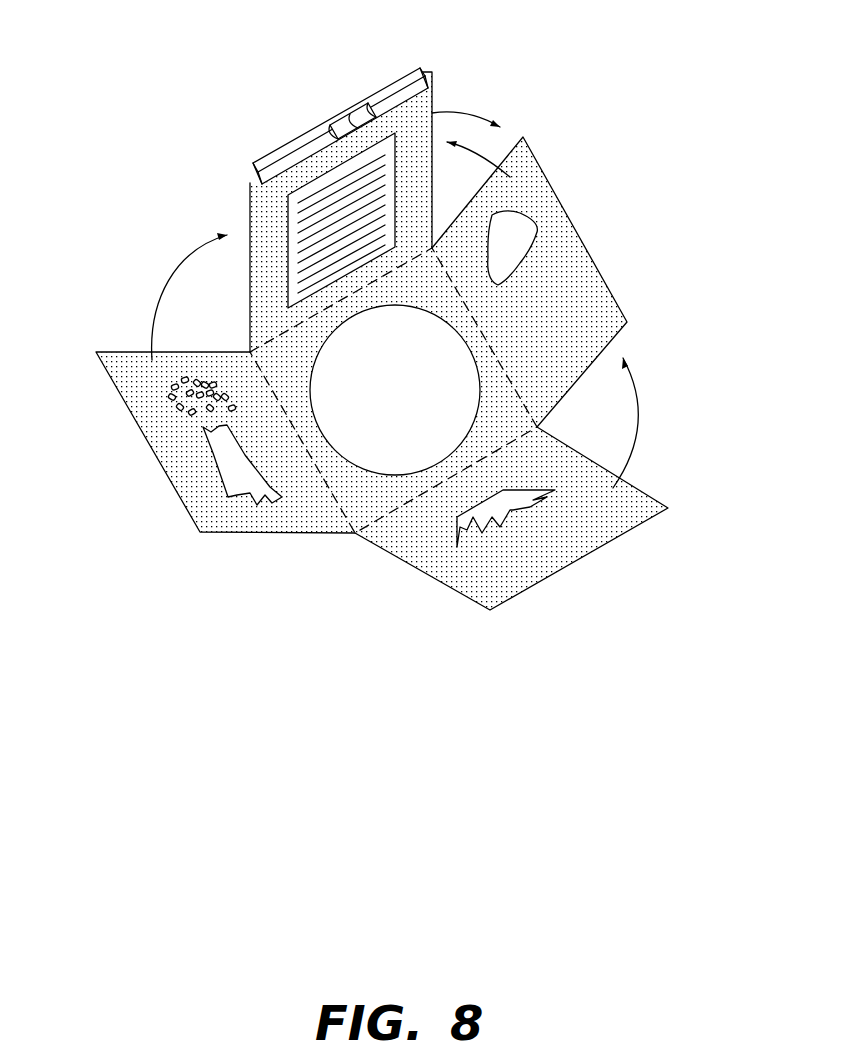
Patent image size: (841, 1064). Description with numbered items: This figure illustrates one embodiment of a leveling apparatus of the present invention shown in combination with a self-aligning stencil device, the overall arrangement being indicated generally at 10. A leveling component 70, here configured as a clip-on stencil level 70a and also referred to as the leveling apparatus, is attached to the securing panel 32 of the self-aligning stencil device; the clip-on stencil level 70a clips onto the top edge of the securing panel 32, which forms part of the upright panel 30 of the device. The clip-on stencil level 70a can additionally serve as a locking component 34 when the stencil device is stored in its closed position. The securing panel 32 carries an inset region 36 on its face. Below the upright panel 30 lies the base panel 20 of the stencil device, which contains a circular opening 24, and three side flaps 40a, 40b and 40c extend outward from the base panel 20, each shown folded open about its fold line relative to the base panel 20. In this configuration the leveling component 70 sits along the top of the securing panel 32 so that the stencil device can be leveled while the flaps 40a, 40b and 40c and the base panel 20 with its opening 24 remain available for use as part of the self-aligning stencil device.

The pet litter box kit 10 is at (374, 309).
The base panel 20 is at (393, 422).
The circular opening 24 is at (380, 401).
The rear panel 30 is at (291, 180).
The securing panel 32 is at (317, 180).
The locking component 34 is at (352, 118).
The grooved insert 36 is at (290, 268).
The side flap 40a is at (565, 228).
The side flap 40b is at (223, 523).
The side flap 40c is at (623, 527).
The leveling component 70 is at (350, 96).
The clip-on stencil level 70a is at (404, 75).